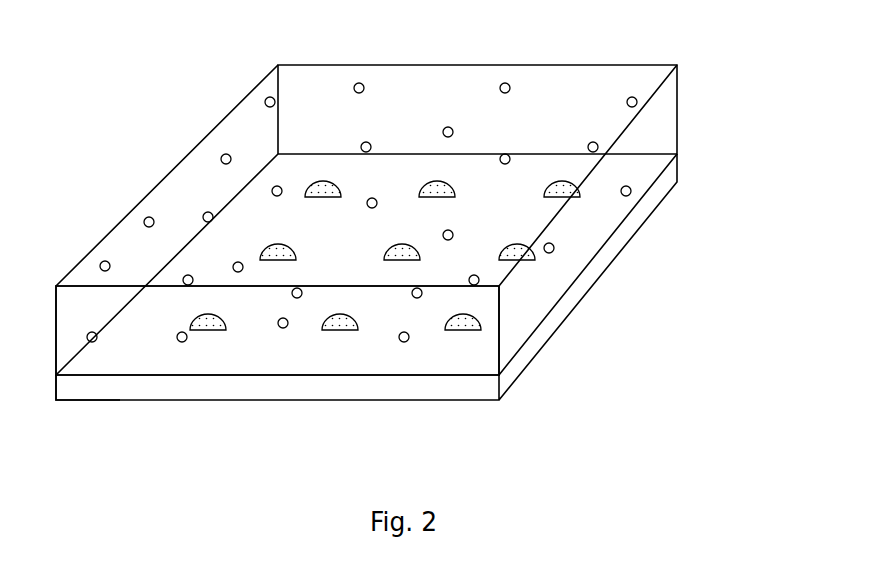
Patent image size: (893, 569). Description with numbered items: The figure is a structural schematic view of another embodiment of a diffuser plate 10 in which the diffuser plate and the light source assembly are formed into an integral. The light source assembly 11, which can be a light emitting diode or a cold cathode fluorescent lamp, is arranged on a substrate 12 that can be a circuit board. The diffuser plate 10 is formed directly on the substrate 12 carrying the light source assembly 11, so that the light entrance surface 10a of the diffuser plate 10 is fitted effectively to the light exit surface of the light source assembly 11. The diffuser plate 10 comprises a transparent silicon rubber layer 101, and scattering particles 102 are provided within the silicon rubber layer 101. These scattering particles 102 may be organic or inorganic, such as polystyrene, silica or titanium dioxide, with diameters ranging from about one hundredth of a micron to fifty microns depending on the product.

The diffuser plate 10 is at (620, 352).
The light entrance surface 10a is at (76, 377).
The silicon rubber layer 101 is at (501, 302).
The scattering particles 102 is at (552, 254).
The light source assembly 11 is at (342, 335).
The substrate 12 is at (188, 382).